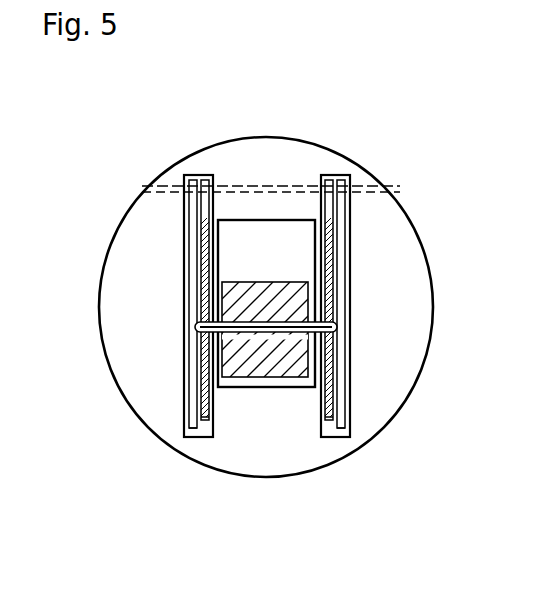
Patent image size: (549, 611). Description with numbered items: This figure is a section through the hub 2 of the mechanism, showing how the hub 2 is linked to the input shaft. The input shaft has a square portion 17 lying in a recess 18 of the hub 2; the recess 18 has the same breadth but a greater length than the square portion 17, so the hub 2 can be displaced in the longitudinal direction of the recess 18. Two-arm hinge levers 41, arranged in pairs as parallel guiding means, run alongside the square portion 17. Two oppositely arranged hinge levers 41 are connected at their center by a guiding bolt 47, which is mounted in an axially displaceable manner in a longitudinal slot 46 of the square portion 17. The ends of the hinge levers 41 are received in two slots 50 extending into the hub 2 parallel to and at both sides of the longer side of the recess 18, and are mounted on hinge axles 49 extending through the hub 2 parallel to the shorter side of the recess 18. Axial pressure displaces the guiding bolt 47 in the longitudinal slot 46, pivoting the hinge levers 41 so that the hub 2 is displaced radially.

The hub 2 is at (117, 293).
The square portion 17 is at (292, 365).
The recess 18 is at (300, 245).
The hinge levers 41 is at (202, 242).
The longitudinal slot 46 is at (285, 337).
The guiding bolt 47 is at (335, 331).
The hinge axles 49 is at (385, 183).
The slots 50 is at (200, 425).